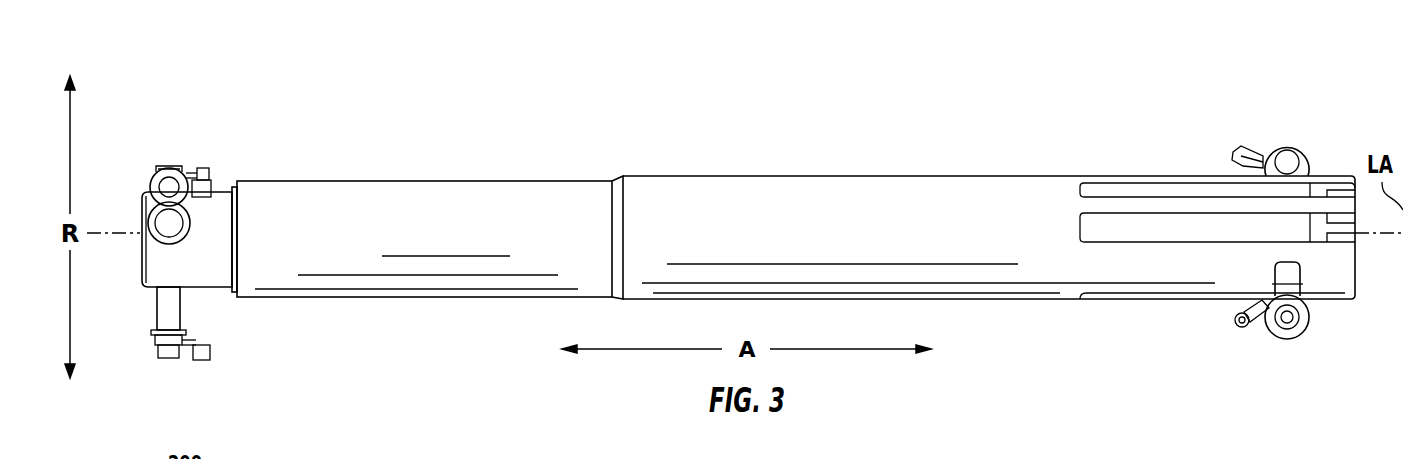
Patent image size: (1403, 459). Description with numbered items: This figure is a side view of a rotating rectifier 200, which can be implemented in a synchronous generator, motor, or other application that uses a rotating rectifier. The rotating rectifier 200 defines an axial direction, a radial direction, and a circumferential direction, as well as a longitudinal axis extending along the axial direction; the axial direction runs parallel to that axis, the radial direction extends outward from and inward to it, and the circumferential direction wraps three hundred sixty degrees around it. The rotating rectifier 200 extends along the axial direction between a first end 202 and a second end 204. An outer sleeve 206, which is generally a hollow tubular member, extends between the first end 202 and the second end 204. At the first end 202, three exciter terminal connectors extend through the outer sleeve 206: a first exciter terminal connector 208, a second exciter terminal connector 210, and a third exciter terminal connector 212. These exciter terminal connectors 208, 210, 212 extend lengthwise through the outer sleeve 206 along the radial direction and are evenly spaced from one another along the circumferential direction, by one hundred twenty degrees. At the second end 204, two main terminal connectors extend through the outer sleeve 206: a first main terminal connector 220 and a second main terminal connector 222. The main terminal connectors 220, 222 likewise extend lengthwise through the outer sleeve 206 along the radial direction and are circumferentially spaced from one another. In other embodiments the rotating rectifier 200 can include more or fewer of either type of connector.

The rotating rectifier 200 is at (337, 157).
The first end 202 is at (155, 130).
The second end 204 is at (1297, 120).
The outer sleeve 206 is at (738, 182).
The first exciter terminal connector 208 is at (168, 165).
The second exciter terminal connector 210 is at (173, 308).
The third exciter terminal connector 212 is at (175, 222).
The first main terminal connector 220 is at (1260, 150).
The second main terminal connector 222 is at (1252, 318).